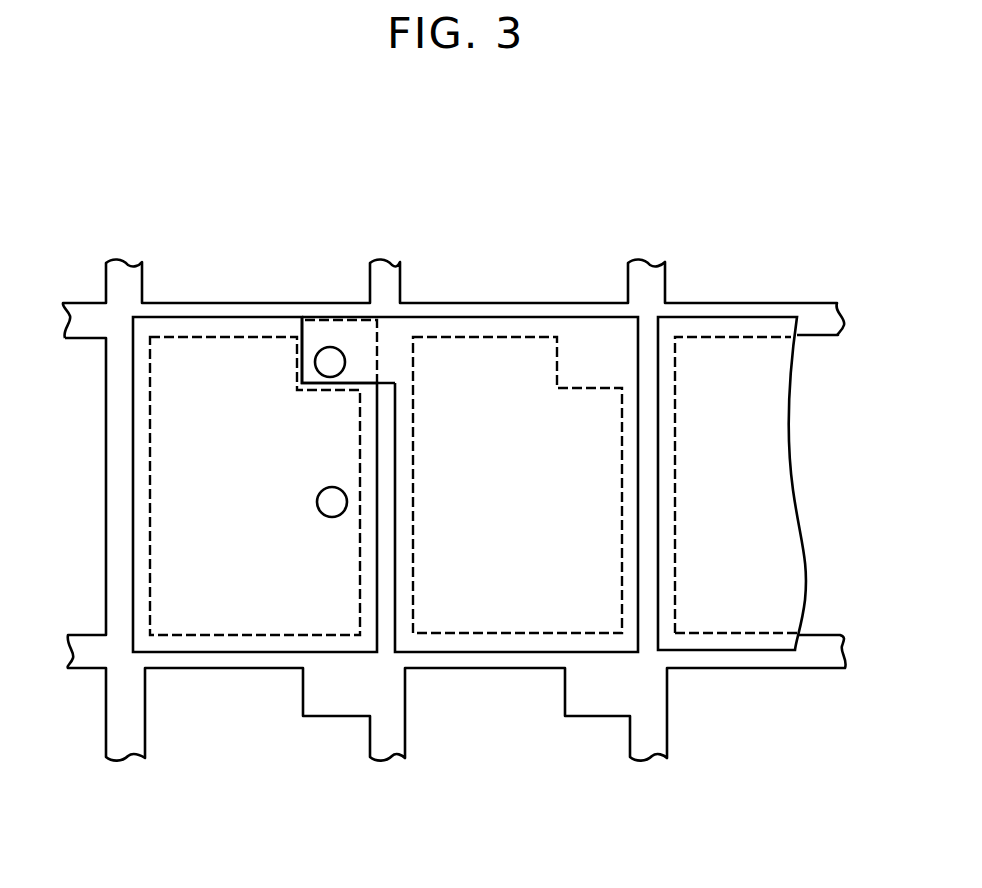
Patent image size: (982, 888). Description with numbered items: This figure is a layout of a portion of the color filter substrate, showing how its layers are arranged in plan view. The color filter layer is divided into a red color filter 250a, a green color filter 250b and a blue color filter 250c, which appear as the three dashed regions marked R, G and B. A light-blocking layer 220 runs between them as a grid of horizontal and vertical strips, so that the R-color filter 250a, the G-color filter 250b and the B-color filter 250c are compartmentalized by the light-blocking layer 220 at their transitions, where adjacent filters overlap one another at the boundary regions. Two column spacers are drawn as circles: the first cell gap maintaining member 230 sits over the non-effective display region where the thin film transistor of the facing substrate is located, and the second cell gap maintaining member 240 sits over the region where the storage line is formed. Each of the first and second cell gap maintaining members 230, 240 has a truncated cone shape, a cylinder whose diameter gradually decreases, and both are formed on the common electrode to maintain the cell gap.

The light-blocking layer 220 is at (568, 303).
The first cell gap maintaining member 230 is at (330, 347).
The second cell gap maintaining member 240 is at (320, 513).
The red color filter 250a is at (726, 317).
The green color filter 250b is at (204, 317).
The blue color filter 250c is at (476, 316).